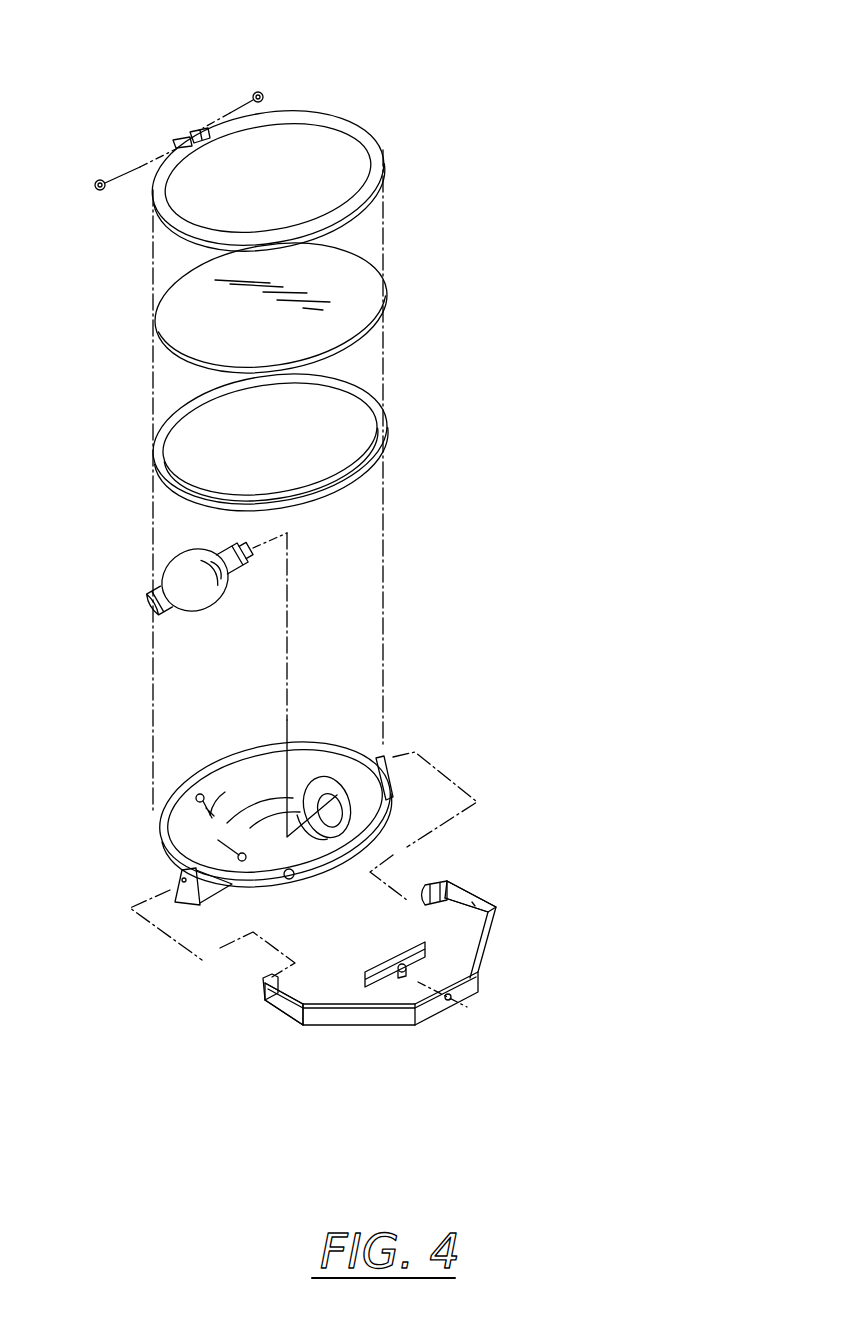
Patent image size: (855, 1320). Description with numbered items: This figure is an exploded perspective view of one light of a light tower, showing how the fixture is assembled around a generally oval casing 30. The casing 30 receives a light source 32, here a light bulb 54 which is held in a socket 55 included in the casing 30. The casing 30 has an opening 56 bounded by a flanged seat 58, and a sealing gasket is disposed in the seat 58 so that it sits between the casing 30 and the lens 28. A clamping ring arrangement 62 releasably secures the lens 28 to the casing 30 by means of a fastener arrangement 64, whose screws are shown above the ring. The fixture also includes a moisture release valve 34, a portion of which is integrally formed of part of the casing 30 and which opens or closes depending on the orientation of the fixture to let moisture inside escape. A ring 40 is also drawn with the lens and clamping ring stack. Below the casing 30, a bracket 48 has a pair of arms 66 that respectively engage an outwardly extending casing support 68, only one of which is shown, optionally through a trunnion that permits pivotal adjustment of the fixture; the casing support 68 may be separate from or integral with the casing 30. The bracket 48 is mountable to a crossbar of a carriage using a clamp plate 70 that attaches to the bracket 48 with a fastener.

The lens 28 is at (347, 297).
The casing 30 is at (303, 885).
The light source 32 is at (150, 563).
The moisture release valve 34 is at (293, 883).
The gasket ring 40 is at (385, 421).
The bracket 48 is at (500, 935).
The light bulb 54 is at (152, 598).
The socket 55 is at (323, 800).
The opening 56 is at (238, 785).
The flanged seat 58 is at (158, 831).
The clamping ring arrangement 62 is at (373, 136).
The fastener arrangement 64 is at (277, 78).
The arms 66 is at (470, 892).
The casing support 68 is at (178, 893).
The clamp plate 70 is at (413, 943).